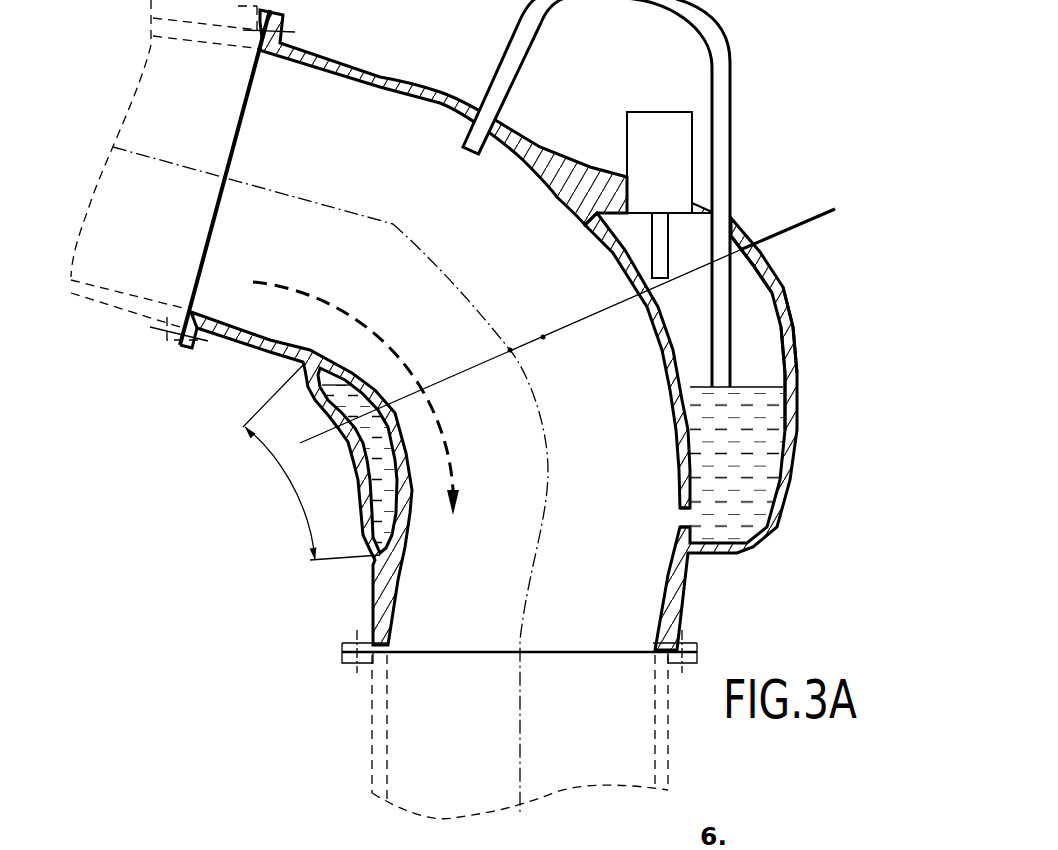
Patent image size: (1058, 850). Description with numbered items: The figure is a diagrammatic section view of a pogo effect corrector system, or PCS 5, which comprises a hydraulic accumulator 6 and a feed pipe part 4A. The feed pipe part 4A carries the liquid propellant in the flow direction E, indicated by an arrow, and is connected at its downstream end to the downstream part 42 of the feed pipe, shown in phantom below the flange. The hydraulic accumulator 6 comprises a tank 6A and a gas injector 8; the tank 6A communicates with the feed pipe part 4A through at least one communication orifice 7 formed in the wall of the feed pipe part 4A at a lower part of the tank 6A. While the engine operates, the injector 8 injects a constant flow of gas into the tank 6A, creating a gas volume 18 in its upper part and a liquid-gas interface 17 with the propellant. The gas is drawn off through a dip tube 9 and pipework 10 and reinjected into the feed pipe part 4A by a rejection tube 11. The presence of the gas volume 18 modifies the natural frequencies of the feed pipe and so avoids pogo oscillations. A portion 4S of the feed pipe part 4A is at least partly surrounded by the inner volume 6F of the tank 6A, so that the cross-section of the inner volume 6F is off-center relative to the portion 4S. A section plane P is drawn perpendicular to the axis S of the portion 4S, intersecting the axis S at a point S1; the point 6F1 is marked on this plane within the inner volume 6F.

The feed pipe part 4A is at (343, 60).
The rejection tube 11 is at (507, 62).
The pipework 10 is at (727, 40).
The gas injector 8 is at (660, 122).
The hydraulic accumulator 6 is at (807, 427).
The inner volume of the tank 6F is at (750, 313).
The dip tube 9 is at (732, 293).
The gas volume 18 is at (757, 337).
The liquid-gas interface 17 is at (763, 383).
The tank 6A is at (785, 393).
The communication orifice 7 is at (680, 517).
The pogo effect corrector system (PCS) 5 is at (843, 525).
The downstream part of the feed pipe 42 is at (378, 740).
The section plane P is at (812, 218).
The axis of the portion S is at (173, 163).
The point of intersection S1 is at (508, 353).
The point 6F1 is at (544, 340).
The flow direction E is at (366, 402).
The portion of the feed pipe part 4S is at (292, 493).